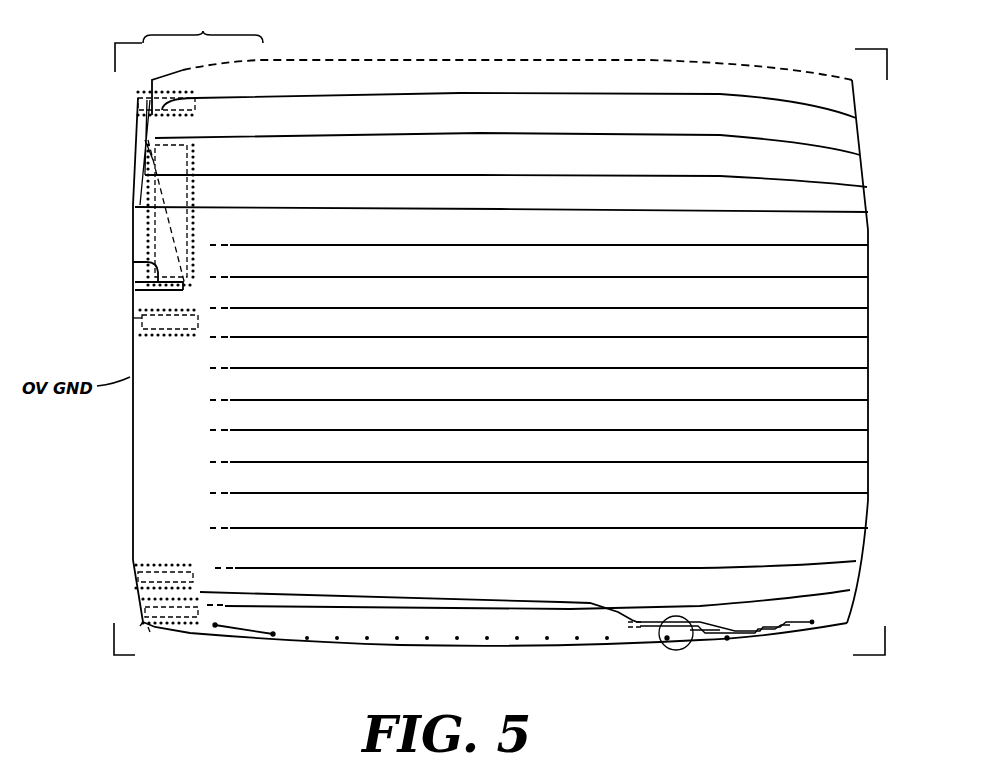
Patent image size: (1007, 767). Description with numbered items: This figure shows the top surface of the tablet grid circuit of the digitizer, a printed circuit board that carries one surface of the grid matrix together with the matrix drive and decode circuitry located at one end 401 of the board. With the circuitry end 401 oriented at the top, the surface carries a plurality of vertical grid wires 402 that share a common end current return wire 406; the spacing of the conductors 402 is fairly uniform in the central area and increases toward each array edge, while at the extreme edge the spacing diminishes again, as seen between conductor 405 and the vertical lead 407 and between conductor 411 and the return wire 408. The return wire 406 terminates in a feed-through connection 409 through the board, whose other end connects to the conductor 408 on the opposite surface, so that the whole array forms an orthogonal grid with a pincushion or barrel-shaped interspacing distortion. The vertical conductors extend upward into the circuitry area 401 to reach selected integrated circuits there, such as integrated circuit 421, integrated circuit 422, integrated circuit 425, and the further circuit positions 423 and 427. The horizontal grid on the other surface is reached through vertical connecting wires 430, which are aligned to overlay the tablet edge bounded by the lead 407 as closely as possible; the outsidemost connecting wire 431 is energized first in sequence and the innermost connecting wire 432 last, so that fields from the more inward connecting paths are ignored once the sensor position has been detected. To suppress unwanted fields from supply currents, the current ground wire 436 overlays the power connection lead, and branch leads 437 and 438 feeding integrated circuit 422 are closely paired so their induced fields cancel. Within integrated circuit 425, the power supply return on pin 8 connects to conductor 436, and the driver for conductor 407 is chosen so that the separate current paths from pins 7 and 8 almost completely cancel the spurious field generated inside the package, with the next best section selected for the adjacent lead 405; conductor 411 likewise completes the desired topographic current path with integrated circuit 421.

The circuitry end of the printed circuit board 401 is at (203, 26).
The vertical grid wires 402 is at (473, 176).
The conductor 405 is at (462, 605).
The common end current return wire 406 is at (868, 349).
The vertical lead 407 is at (467, 643).
The current return wire 408 is at (467, 62).
The feed-through connection 409 is at (853, 82).
The conductor 411 is at (457, 93).
The integrated circuit 421 is at (136, 102).
The integrated circuit 422 is at (130, 196).
The connector pad 423 is at (133, 323).
The integrated circuit 425 is at (143, 612).
The lower connector pad 427 is at (136, 578).
The vertical connecting wires 430 is at (297, 592).
The outsidemost connecting wire 431 is at (243, 632).
The innermost connecting wire 432 is at (630, 622).
The current ground wire 436 is at (130, 425).
The branch lead 437 is at (133, 263).
The branch lead 438 is at (135, 292).
The pin 8 is at (140, 628).
The pin 7 is at (150, 632).